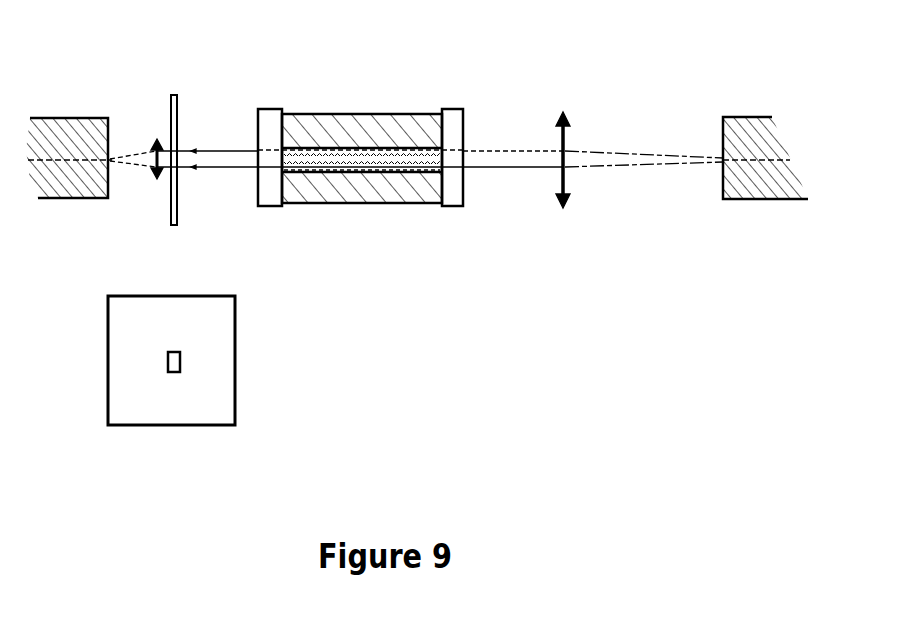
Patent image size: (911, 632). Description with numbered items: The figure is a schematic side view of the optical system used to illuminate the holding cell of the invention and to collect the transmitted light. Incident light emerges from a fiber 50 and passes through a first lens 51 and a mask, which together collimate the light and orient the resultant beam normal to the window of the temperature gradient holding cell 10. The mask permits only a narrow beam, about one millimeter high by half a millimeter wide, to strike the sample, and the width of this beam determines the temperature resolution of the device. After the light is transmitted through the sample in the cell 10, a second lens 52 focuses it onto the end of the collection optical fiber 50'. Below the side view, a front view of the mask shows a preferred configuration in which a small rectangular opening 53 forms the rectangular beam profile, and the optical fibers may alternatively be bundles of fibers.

The cell 10 is at (363, 133).
The fiber 50 is at (67, 113).
The collection optical fiber 50' is at (728, 110).
The first lens 51 is at (150, 142).
The second lens 52 is at (561, 118).
The opening 53 is at (180, 357).